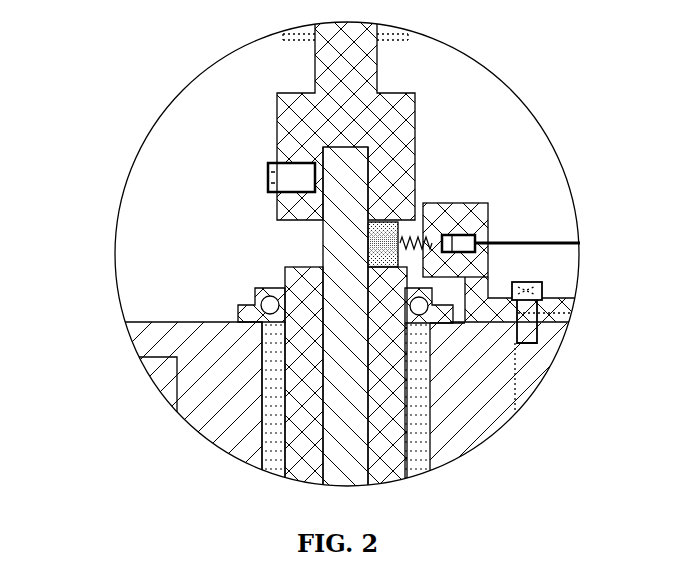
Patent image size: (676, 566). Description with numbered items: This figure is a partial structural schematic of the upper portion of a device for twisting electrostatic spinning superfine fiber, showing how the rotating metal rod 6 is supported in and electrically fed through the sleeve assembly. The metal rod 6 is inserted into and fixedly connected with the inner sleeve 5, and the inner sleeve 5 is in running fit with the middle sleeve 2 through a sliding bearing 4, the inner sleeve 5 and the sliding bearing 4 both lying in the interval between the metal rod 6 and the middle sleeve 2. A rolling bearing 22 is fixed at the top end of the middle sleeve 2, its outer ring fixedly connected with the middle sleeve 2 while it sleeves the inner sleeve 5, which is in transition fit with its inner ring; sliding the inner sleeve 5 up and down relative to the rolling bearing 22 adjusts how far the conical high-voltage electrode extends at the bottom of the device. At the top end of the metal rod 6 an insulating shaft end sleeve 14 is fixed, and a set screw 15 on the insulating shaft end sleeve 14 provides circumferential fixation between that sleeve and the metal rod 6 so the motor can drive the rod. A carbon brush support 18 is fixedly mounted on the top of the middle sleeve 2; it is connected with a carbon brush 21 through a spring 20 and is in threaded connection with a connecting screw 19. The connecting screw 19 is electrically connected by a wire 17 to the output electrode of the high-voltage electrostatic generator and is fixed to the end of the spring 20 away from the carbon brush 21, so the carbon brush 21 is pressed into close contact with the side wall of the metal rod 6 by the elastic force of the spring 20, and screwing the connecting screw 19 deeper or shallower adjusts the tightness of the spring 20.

The middle sleeve 2 is at (473, 387).
The sliding bearing 4 is at (262, 437).
The inner sleeve 5 is at (408, 435).
The metal rod 6 is at (330, 235).
The insulating shaft end sleeve 14 is at (315, 60).
The set screw 15 is at (293, 177).
The wire 17 is at (542, 242).
The carbon brush support 18 is at (490, 273).
The connecting screw 19 is at (488, 223).
The spring 20 is at (480, 197).
The carbon brush 21 is at (420, 203).
The rolling bearing 22 is at (252, 311).